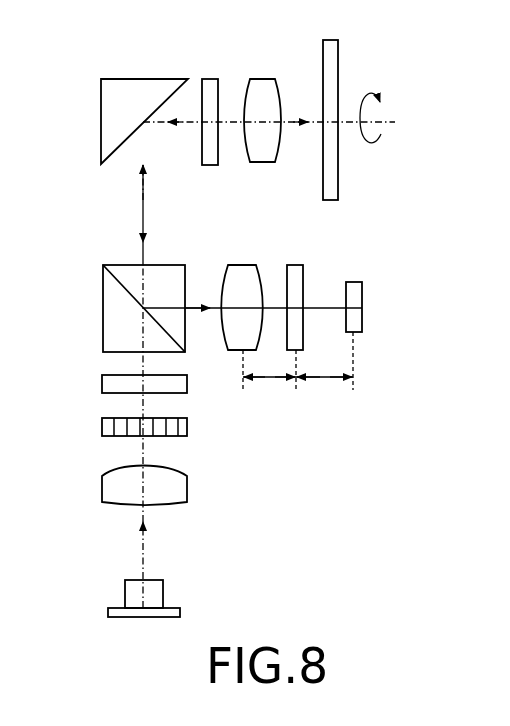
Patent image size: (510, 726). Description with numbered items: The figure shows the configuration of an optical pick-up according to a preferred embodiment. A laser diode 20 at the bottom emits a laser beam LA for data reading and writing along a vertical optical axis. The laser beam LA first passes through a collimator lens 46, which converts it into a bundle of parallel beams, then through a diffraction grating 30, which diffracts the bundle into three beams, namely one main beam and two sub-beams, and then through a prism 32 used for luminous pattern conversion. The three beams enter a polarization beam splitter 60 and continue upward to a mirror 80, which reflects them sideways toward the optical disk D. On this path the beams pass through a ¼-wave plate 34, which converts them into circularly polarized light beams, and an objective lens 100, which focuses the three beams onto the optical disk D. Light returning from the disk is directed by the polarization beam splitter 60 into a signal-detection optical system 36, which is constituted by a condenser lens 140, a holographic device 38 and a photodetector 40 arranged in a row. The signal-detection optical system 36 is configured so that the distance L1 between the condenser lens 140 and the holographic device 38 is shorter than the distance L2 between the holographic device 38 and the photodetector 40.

The mirror 80 is at (138, 78).
The ¼-wave plate 34 is at (210, 78).
The objective lens 100 is at (262, 78).
The optical disk D is at (332, 40).
The polarization beam splitter 60 is at (103, 315).
The condenser lens 140 is at (246, 265).
The holographic device 38 is at (296, 265).
The photodetector 40 is at (352, 282).
The signal-detection optical system 36 is at (374, 333).
The distance L1 is at (272, 380).
The distance L2 is at (328, 380).
The prism 32 is at (189, 386).
The diffraction grating 30 is at (187, 428).
The collimator lens 46 is at (187, 492).
The laser beam LA is at (150, 549).
The laser diode 20 is at (163, 592).